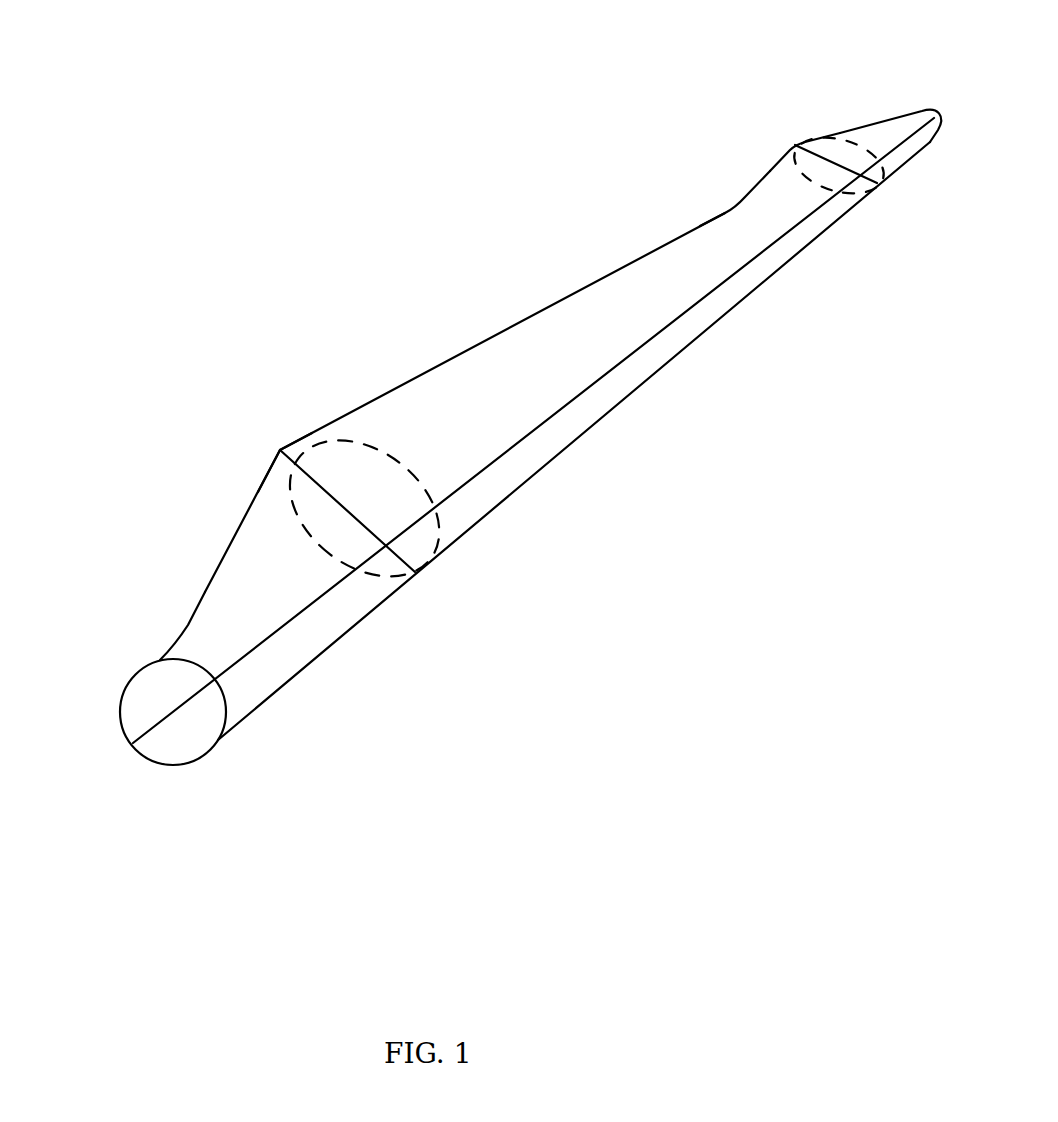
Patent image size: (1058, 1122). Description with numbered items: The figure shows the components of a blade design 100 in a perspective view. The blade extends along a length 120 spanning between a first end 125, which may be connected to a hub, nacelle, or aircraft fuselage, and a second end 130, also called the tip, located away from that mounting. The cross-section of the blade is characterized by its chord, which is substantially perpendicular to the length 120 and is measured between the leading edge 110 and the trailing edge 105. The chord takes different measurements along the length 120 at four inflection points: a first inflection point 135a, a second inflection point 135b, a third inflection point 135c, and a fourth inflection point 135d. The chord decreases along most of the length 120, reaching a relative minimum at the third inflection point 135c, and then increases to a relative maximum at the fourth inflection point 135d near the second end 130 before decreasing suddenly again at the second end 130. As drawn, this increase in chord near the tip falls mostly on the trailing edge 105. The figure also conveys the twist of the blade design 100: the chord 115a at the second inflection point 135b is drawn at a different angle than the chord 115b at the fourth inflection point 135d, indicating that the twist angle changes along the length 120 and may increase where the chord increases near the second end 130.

The blade design 100 is at (358, 170).
The trailing edge 105 is at (448, 337).
The leading edge 110 is at (597, 437).
The chord 115a is at (362, 517).
The chord 115b is at (840, 167).
The length 120 is at (518, 443).
The first end 125 is at (120, 743).
The second end 130 is at (938, 107).
The first inflection point 135a is at (178, 635).
The second inflection point 135b is at (280, 448).
The third inflection point 135c is at (733, 207).
The fourth inflection point 135d is at (793, 145).